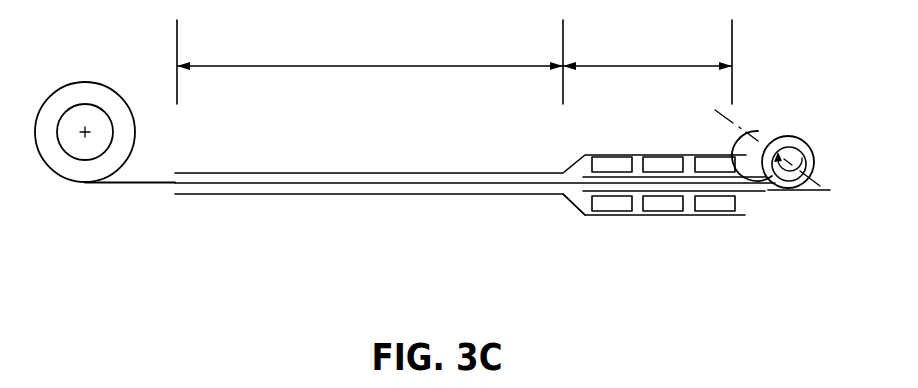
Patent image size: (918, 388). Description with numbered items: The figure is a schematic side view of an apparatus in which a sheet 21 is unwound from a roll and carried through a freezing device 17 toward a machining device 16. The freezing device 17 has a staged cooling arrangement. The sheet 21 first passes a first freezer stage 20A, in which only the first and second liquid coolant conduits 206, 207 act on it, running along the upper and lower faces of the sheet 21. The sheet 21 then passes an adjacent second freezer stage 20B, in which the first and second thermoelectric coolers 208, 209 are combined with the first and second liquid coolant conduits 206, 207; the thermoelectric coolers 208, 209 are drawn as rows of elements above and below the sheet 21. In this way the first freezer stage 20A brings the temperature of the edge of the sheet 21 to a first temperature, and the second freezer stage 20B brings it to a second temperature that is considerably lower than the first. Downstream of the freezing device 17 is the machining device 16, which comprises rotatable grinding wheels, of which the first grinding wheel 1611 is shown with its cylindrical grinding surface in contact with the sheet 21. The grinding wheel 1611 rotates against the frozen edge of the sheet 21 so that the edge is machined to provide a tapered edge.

The first freezer stage 20A is at (370, 62).
The second freezer stage 20B is at (647, 62).
The sheet 21 is at (148, 185).
The first liquid coolant conduit 206 is at (420, 172).
The second liquid coolant conduit 207 is at (381, 196).
The freezing device 17 is at (536, 219).
The first thermoelectric cooler 208 is at (613, 157).
The second thermoelectric cooler 209 is at (668, 212).
The first grinding wheel 1611 is at (798, 121).
The machining device 16 is at (802, 212).